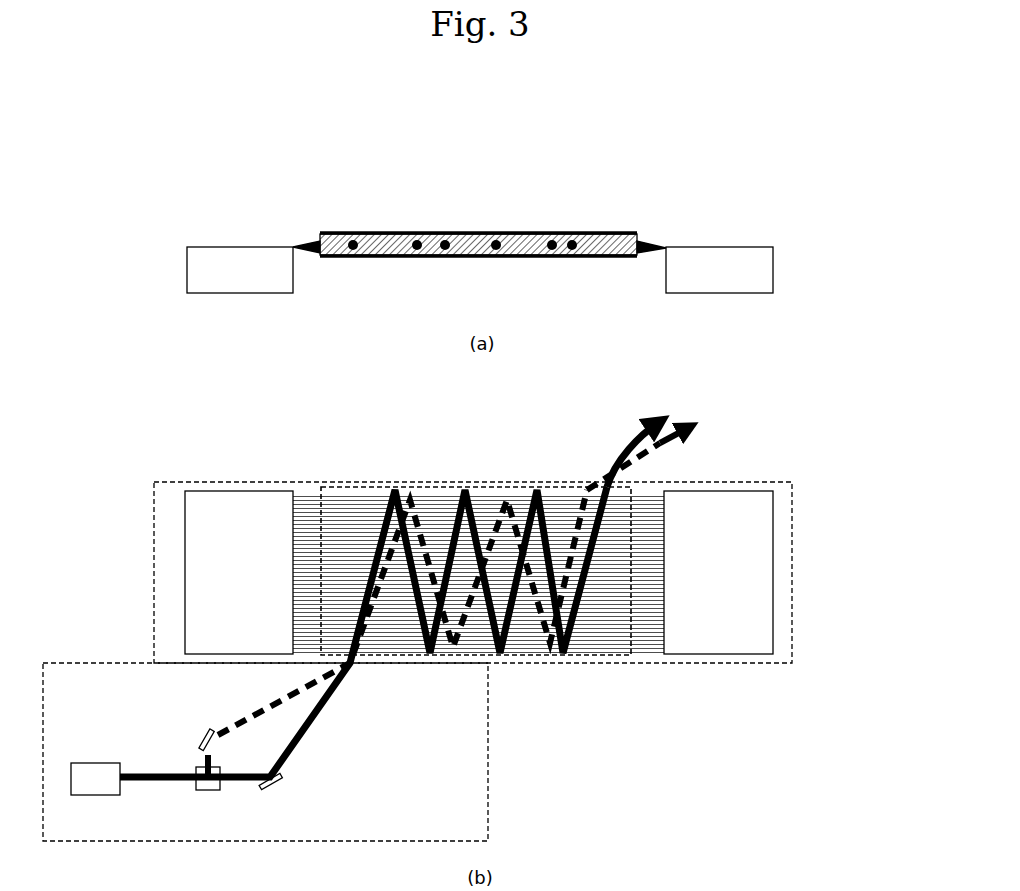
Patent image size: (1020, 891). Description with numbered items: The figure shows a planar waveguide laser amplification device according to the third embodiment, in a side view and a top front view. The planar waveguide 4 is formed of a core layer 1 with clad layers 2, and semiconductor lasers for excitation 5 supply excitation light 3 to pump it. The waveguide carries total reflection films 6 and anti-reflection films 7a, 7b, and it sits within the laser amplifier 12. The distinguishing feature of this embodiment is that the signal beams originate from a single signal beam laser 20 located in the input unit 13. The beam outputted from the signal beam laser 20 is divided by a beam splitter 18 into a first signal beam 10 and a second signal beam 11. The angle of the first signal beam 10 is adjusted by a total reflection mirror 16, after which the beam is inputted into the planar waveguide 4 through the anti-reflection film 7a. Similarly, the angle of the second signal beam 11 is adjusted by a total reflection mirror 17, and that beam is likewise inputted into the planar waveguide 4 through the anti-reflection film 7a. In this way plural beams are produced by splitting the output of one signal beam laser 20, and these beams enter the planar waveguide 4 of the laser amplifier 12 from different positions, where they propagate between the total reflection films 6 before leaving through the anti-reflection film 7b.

The core layer 1 is at (636, 238).
The clad layers 2 is at (555, 237).
The excitation light 3 is at (318, 240).
The planar waveguide 4 is at (503, 232).
The semiconductor lasers for excitation 5 is at (216, 247).
The total reflection films 6 is at (463, 487).
The anti-reflection film 7a is at (367, 660).
The anti-reflection film 7b is at (595, 487).
The first signal beam 10 is at (661, 418).
The second signal beam 11 is at (690, 426).
The laser amplifier 12 is at (792, 613).
The input unit 13 is at (488, 813).
The total reflection mirror 16 is at (197, 750).
The total reflection mirror 17 is at (283, 786).
The beam splitter 18 is at (208, 790).
The signal beam laser 20 is at (98, 795).